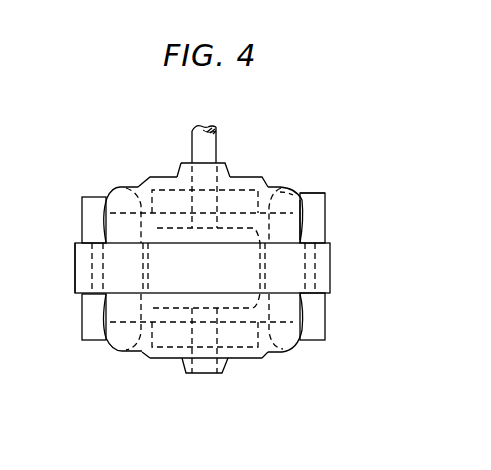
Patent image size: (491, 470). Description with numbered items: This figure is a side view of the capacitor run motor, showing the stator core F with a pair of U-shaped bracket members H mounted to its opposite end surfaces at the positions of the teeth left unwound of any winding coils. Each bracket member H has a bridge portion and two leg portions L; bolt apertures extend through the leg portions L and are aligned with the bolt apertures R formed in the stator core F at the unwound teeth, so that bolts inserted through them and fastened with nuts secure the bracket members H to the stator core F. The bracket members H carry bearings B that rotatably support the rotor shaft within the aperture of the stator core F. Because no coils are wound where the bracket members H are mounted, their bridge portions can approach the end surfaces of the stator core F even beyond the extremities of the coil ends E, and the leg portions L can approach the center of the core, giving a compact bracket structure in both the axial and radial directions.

The bearing B is at (237, 203).
The leg portion L is at (82, 221).
The bolt aperture R is at (322, 266).
The stator core F is at (76, 280).
The coil end E is at (297, 208).
The bracket member H is at (318, 193).